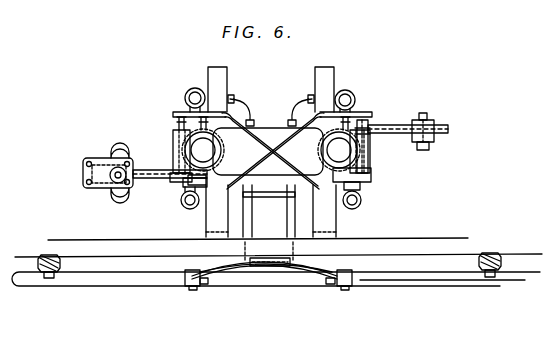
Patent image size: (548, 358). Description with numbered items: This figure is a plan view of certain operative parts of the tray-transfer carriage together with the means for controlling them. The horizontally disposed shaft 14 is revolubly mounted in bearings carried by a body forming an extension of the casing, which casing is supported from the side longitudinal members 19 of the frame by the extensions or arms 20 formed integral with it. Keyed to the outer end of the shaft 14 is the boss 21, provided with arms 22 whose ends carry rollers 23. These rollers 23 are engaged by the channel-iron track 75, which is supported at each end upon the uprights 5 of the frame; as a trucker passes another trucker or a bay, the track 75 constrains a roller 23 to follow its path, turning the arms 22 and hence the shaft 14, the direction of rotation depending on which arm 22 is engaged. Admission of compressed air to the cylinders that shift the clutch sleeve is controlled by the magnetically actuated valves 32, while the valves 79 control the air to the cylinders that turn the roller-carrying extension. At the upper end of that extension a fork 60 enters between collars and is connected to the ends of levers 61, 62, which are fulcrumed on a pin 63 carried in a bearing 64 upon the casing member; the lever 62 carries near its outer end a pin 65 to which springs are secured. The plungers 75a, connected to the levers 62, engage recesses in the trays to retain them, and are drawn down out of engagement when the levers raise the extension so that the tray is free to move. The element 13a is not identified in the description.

The vertical members 5 is at (48, 254).
The central column 13a is at (269, 222).
The horizontally disposed shaft 14 is at (278, 268).
The side longitudinal members 19 is at (97, 246).
The extensions or arms 20 is at (227, 84).
The boss 21 is at (262, 268).
The arms 22 is at (207, 285).
The rollers 23 is at (187, 288).
The magnetically actuated valves 32 is at (186, 96).
The fork 60 is at (183, 150).
The lever 61 is at (178, 127).
The lever 62 is at (160, 179).
The pin 63 is at (362, 125).
The bearing 64 is at (408, 145).
The pin 65 is at (433, 125).
The track 75 is at (100, 284).
The plungers 75a is at (116, 180).
The valves 79 is at (188, 209).